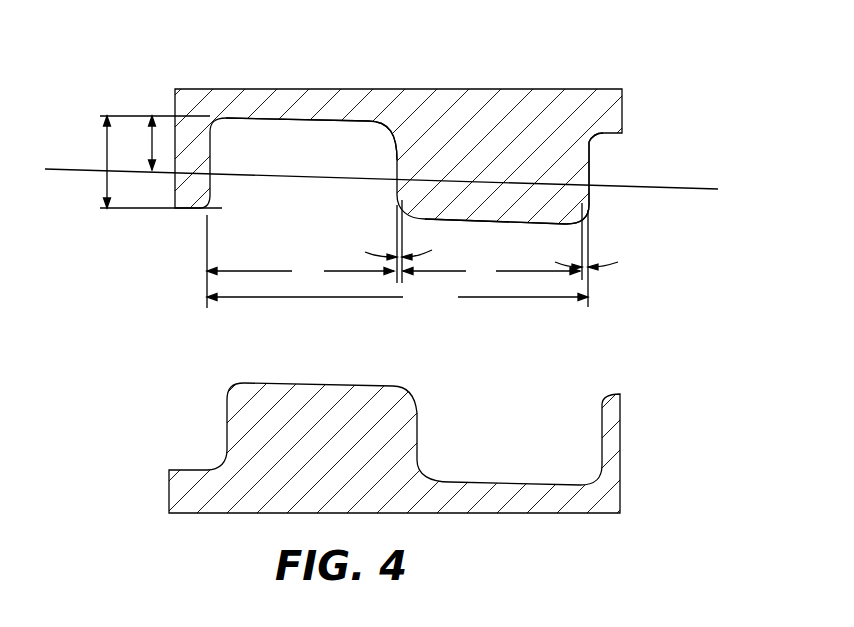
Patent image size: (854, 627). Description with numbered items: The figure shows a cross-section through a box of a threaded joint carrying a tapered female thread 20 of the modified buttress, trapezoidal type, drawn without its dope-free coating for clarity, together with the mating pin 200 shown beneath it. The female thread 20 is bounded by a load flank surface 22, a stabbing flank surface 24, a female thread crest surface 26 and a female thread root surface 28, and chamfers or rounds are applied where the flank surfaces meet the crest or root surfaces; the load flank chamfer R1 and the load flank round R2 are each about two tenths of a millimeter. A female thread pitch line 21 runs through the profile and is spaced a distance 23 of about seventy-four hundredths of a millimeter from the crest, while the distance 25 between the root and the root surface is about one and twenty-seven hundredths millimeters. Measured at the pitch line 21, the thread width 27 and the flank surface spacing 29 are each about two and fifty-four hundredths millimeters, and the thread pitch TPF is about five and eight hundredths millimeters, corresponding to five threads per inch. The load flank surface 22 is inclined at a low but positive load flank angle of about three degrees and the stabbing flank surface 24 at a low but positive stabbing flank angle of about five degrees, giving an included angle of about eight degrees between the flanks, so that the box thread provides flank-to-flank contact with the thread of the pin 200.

The tapered female thread 20 is at (498, 110).
The female thread pitch line 21 is at (266, 178).
The load flank surface 22 is at (590, 194).
The distance from pitch line to crest 23 is at (152, 150).
The stabbing flank surface 24 is at (390, 158).
The distance between root and root surface 25 is at (105, 150).
The female thread crest surface 26 is at (498, 223).
The thread width at pitch line 27 is at (492, 241).
The female thread root surface 28 is at (291, 118).
The flank surface spacing at pitch line 29 is at (302, 256).
The load flank chamfer R1 is at (583, 216).
The load flank round R2 is at (595, 137).
The thread pitch TPF is at (397, 259).
The pin 200 is at (397, 448).